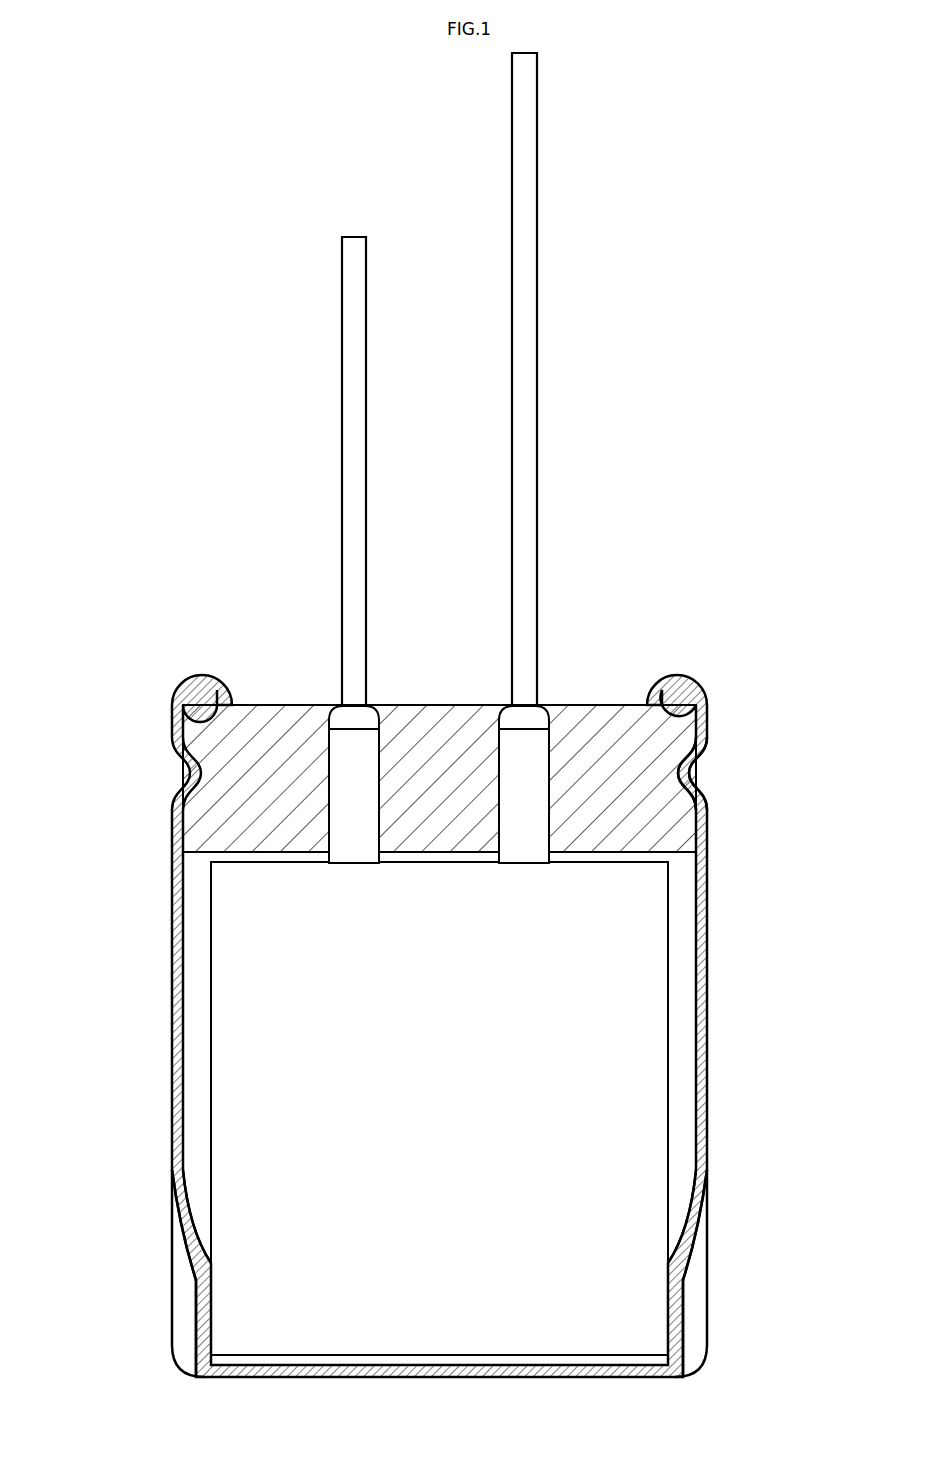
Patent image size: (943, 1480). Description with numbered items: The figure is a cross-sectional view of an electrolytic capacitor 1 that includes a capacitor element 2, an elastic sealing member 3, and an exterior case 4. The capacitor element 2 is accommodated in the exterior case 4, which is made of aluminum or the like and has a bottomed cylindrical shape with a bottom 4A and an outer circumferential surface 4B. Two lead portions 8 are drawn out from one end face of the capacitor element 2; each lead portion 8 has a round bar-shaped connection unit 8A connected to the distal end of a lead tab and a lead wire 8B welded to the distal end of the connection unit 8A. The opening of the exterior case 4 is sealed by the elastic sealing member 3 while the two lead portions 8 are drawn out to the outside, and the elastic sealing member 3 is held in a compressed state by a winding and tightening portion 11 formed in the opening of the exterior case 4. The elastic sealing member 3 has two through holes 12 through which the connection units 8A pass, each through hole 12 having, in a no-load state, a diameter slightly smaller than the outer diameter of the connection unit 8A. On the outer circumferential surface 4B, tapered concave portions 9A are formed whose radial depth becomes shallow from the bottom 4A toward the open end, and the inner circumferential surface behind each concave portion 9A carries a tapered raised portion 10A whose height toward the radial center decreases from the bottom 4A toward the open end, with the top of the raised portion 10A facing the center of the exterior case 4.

The electrolytic capacitor 1 is at (694, 137).
The capacitor element 2 is at (612, 1033).
The elastic sealing member 3 is at (436, 718).
The exterior case 4 is at (77, 1312).
The bottom 4A is at (222, 1378).
The outer circumferential surface 4B is at (173, 1170).
The lead portion 8 is at (190, 548).
The connection unit 8A is at (340, 757).
The lead wire 8B is at (341, 592).
The concave portion 9A is at (705, 1300).
The raised portion 10A is at (676, 1213).
The winding and tightening portion 11 is at (690, 777).
The through hole 12 is at (348, 806).